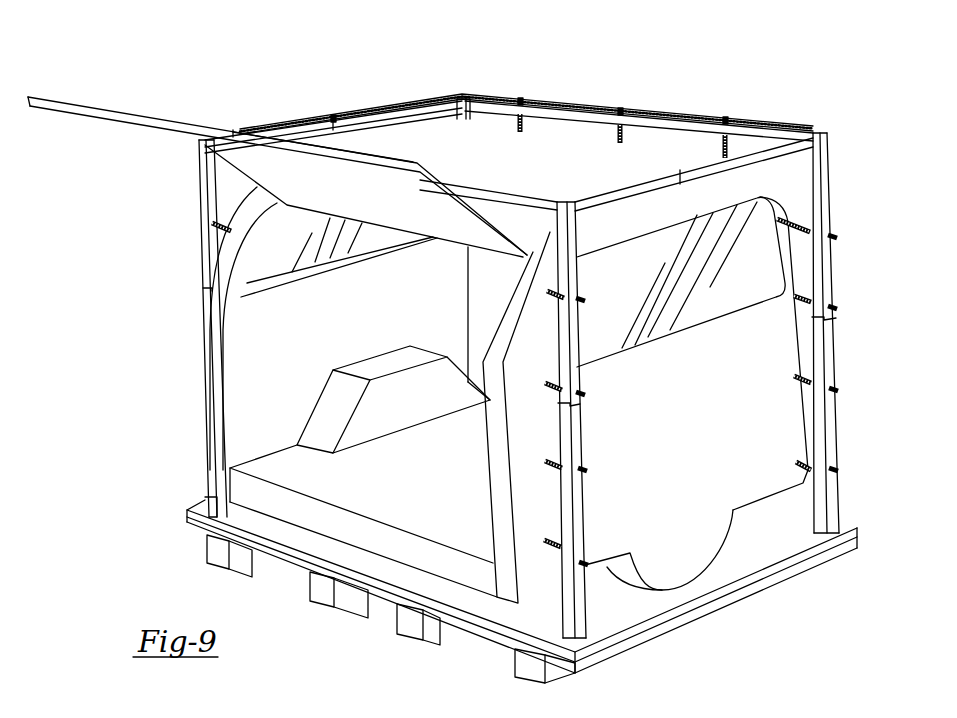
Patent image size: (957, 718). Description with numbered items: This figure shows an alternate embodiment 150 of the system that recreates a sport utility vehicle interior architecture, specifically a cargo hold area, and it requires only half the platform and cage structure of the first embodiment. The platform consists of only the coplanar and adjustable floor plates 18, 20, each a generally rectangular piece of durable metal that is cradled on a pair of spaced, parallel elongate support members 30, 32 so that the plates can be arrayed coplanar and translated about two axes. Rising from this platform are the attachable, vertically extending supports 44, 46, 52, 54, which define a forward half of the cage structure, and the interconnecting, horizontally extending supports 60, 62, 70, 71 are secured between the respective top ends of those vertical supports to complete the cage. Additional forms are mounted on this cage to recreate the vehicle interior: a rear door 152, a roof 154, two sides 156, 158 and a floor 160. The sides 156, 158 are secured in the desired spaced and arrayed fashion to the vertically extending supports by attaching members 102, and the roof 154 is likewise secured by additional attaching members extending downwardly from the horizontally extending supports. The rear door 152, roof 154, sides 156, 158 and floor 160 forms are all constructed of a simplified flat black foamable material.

The floor plate 18 is at (282, 568).
The floor plate 20 is at (480, 633).
The elongate support member 30 is at (210, 552).
The elongate support member 32 is at (410, 615).
The vertically extending support 44 is at (539, 426).
The vertically extending support 46 is at (843, 322).
The vertically extending support 52 is at (488, 110).
The vertically extending support 54 is at (186, 367).
The horizontally extending support 60 is at (488, 181).
The horizontally extending support 62 is at (626, 181).
The horizontally extending support 70 is at (366, 101).
The horizontally extending support 71 is at (623, 93).
The attaching member 102 is at (224, 222).
The alternate embodiment 150 is at (119, 316).
The rear door 152 is at (265, 168).
The roof 154 is at (416, 151).
The side 156 is at (678, 447).
The side 158 is at (338, 313).
The floor 160 is at (426, 466).